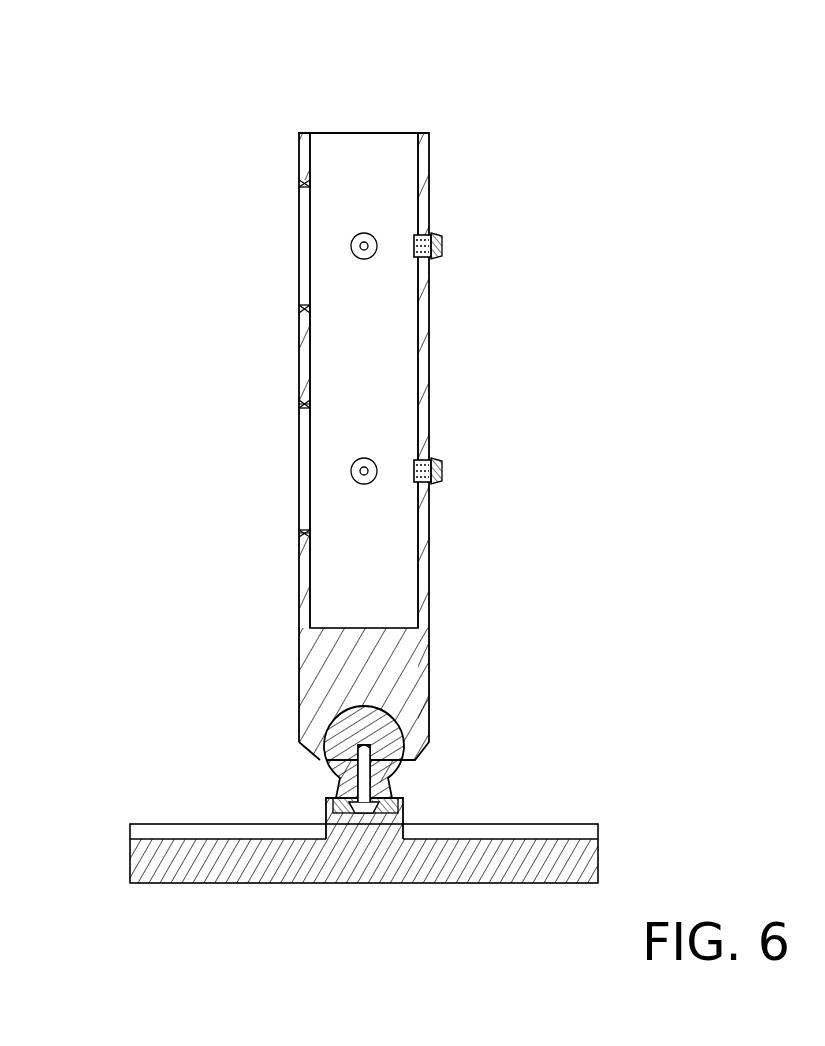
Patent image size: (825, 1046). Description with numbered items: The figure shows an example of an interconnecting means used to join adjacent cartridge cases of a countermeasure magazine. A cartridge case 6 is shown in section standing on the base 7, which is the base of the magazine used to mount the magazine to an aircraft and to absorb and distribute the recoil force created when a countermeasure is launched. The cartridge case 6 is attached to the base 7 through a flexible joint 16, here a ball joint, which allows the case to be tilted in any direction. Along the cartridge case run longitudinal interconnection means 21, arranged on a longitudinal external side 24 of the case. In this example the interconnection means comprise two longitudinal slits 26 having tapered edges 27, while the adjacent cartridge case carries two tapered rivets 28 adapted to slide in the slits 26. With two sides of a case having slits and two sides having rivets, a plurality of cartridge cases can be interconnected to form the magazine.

The cartridge case 6 is at (324, 412).
The base 7 is at (543, 865).
The flexible joint 16 is at (445, 777).
The longitudinal interconnection means 21 is at (202, 297).
The longitudinal external side 24 is at (297, 358).
The longitudinal slit 26 is at (265, 238).
The tapered edge 27 is at (300, 409).
The tapered rivet 28 is at (438, 247).